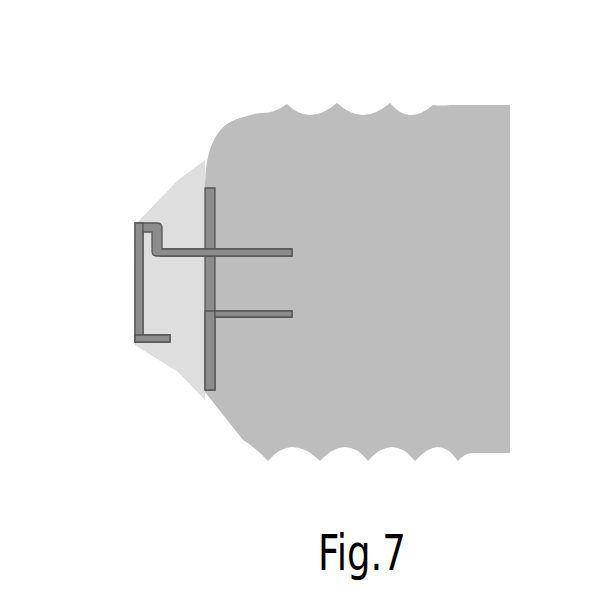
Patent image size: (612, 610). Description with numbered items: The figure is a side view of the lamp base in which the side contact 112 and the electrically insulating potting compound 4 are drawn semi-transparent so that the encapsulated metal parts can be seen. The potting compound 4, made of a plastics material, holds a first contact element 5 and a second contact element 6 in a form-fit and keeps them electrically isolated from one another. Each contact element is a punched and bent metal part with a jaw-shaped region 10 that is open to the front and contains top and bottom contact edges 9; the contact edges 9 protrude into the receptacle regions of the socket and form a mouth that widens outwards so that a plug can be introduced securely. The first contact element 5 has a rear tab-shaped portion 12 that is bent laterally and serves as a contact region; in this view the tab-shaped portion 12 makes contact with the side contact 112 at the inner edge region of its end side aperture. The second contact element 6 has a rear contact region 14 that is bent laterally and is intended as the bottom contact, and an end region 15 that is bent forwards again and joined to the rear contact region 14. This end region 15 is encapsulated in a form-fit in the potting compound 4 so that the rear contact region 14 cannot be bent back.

The potting compound 4 is at (176, 192).
The side contact 112 is at (486, 105).
The first contact element 5 is at (248, 289).
The tab-shaped portion 12 is at (215, 392).
The contact edges 9 is at (281, 249).
The second contact element 6 is at (213, 282).
The rear contact region 14 is at (135, 273).
The end region 15 is at (157, 345).
The jaw-shaped region 10 is at (312, 253).